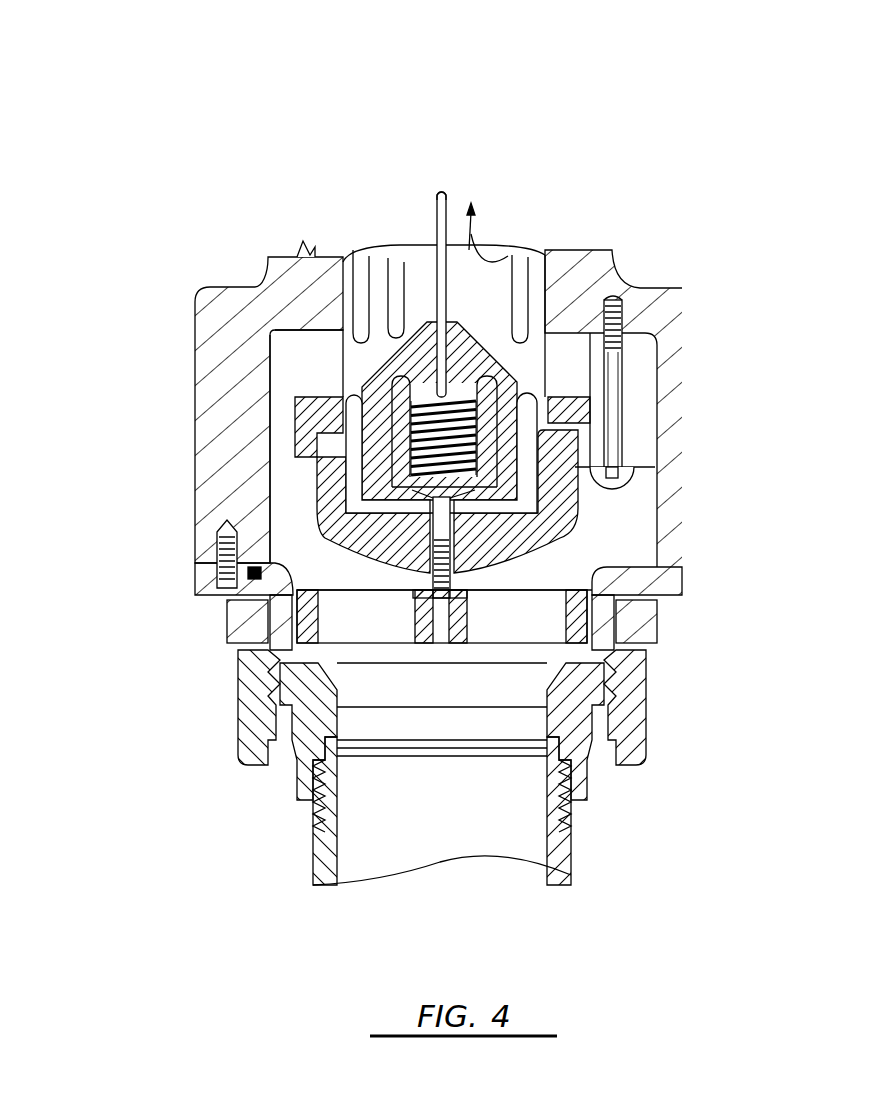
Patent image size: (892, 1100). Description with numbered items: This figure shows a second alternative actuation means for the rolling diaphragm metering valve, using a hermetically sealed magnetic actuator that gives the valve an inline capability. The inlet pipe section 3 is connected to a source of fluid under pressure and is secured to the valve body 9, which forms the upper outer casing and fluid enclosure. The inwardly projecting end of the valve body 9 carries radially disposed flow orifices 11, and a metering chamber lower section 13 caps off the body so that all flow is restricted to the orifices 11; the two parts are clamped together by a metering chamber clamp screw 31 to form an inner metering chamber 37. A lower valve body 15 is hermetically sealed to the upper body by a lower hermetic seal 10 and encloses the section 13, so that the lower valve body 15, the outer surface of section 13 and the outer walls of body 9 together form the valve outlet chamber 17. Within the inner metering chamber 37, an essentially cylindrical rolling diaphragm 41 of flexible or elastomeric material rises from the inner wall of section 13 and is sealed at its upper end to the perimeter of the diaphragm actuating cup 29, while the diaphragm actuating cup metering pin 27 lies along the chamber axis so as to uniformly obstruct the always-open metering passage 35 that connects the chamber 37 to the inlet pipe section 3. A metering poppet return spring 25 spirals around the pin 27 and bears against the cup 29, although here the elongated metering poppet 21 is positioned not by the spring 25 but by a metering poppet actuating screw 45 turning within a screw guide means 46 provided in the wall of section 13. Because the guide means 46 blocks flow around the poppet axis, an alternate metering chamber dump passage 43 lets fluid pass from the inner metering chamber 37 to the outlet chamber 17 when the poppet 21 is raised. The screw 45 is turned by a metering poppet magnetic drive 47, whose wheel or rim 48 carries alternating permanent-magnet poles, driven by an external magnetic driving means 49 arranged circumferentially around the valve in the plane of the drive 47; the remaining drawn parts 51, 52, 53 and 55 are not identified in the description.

The inlet pipe section 3 is at (512, 251).
The valve body 9 is at (215, 320).
The lower hermetic seal 10 is at (220, 593).
The flow orifices 11 is at (318, 353).
The metering chamber lower section 13 is at (645, 440).
The lower valve body 15 is at (205, 580).
The valve outlet chamber 17 is at (290, 500).
The metering poppet 21 is at (395, 553).
The metering poppet return spring 25 is at (352, 473).
The diaphragm actuating cup metering pin 27 is at (444, 190).
The diaphragm actuating cup 29 is at (505, 385).
The metering chamber clamp screw 31 is at (622, 470).
The metering passage 35 is at (436, 262).
The inner metering chamber 37 is at (383, 363).
The rolling diaphragm 41 is at (305, 437).
The alternate metering chamber dump passage 43 is at (427, 558).
The metering poppet actuating screw 45 is at (453, 572).
The metering poppet actuating screw guide means 46 is at (458, 561).
The metering poppet magnetic drive 47 is at (470, 634).
The wheel or rim 48 is at (612, 572).
The external magnetic driving means 49 is at (660, 622).
The nut 51 is at (640, 733).
The collar 52 is at (624, 664).
The threaded tube 53 is at (587, 798).
The pipe 55 is at (572, 850).